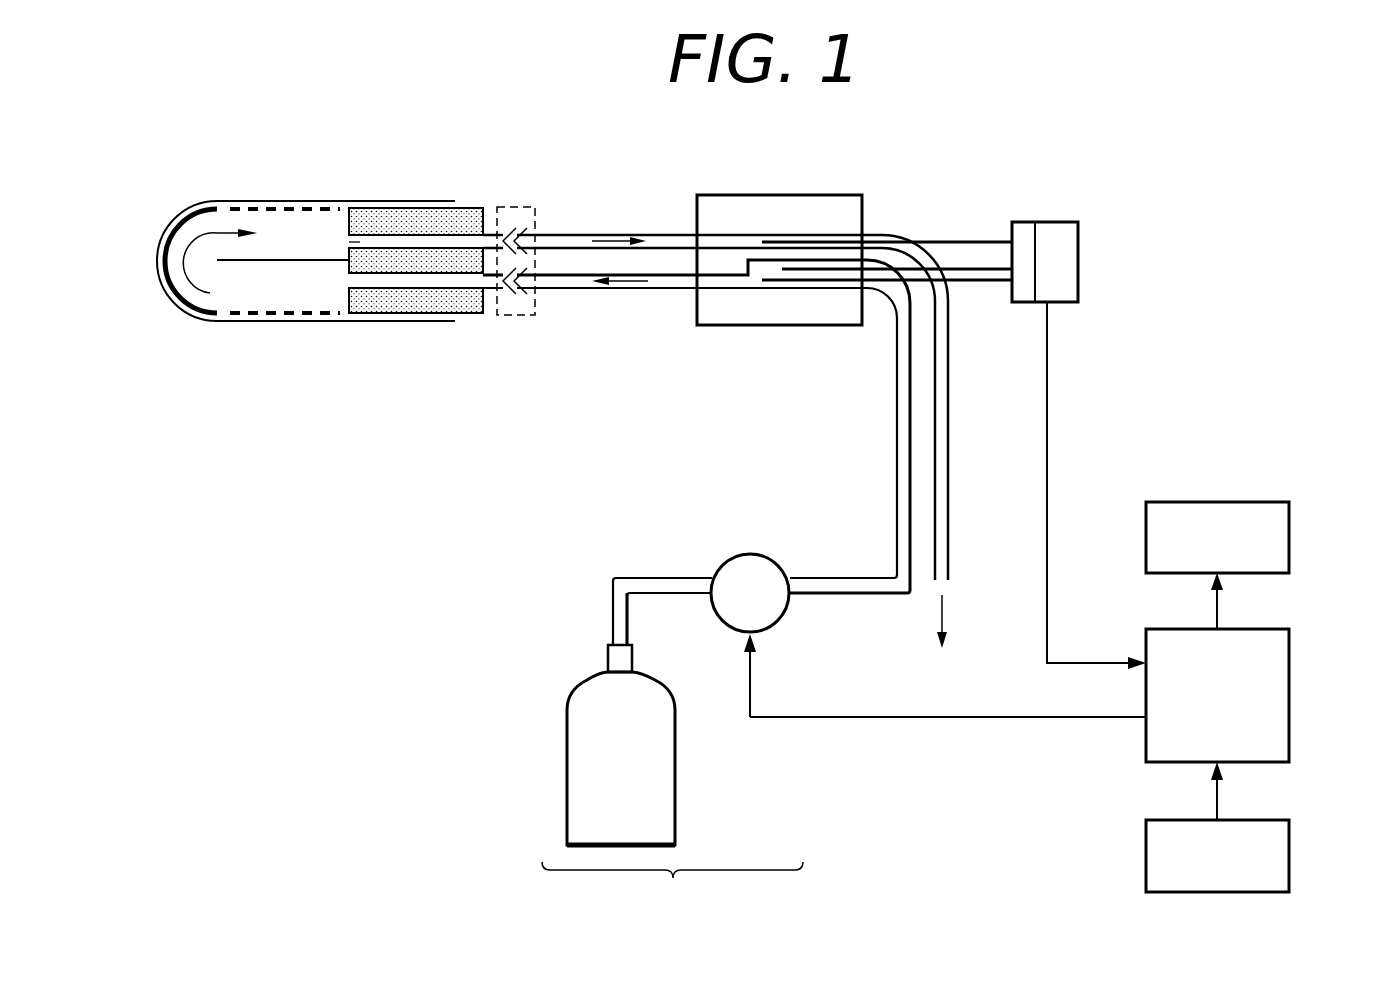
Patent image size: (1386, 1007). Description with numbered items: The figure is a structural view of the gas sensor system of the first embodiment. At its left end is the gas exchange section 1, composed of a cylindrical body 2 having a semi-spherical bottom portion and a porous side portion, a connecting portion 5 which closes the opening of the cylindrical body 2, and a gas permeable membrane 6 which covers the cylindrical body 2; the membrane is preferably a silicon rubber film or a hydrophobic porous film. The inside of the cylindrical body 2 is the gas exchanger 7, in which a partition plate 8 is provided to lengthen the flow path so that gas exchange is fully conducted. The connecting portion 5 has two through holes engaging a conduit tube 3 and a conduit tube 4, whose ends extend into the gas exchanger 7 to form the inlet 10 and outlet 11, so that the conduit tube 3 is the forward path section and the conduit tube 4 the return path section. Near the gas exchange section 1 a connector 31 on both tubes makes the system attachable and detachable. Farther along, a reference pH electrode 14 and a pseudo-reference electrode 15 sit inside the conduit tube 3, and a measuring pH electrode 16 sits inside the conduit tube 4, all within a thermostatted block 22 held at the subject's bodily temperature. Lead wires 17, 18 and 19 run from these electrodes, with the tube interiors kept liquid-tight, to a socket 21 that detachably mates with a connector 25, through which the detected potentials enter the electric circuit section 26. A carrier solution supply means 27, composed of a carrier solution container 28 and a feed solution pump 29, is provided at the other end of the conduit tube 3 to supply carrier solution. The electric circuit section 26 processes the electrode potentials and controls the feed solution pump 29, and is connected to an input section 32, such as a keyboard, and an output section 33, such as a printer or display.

The gas exchange section 1 is at (326, 183).
The cylindrical body 2 is at (176, 242).
The conduit tube 3 is at (557, 290).
The conduit tube 4 is at (552, 232).
The connecting portion 5 is at (443, 310).
The gas permeable membrane 6 is at (311, 323).
The gas exchanger 7 is at (219, 297).
The partition plate 8 is at (267, 262).
The inlet 10 is at (346, 283).
The outlet 11 is at (346, 242).
The reference pH electrode 14 is at (775, 283).
The pseudo-reference electrode 15 is at (800, 272).
The measuring pH electrode 16 is at (790, 237).
The lead wire 17 is at (967, 288).
The lead wire 18 is at (997, 283).
The lead wire 19 is at (927, 235).
The socket 21 is at (1027, 222).
The thermostatted block 22 is at (697, 313).
The connector 25 is at (1068, 303).
The electric circuit section 26 is at (1290, 663).
The carrier solution supply means 27 is at (672, 890).
The carrier solution container 28 is at (678, 814).
The feed solution pump 29 is at (777, 626).
The connector 31 is at (513, 317).
The input section 32 is at (1290, 840).
The output section 33 is at (1290, 525).